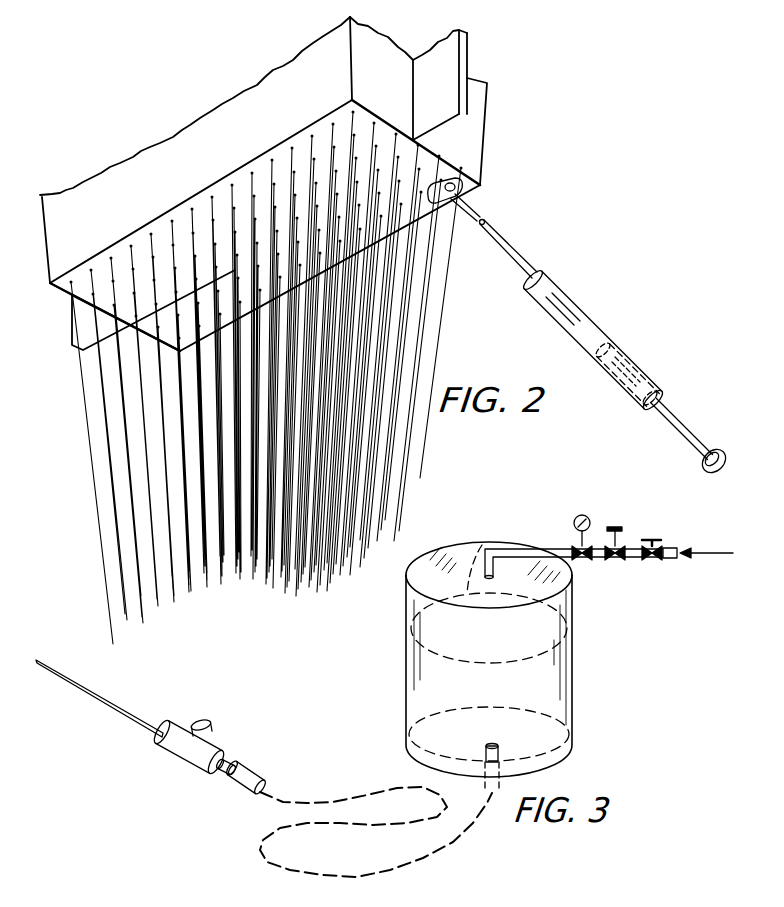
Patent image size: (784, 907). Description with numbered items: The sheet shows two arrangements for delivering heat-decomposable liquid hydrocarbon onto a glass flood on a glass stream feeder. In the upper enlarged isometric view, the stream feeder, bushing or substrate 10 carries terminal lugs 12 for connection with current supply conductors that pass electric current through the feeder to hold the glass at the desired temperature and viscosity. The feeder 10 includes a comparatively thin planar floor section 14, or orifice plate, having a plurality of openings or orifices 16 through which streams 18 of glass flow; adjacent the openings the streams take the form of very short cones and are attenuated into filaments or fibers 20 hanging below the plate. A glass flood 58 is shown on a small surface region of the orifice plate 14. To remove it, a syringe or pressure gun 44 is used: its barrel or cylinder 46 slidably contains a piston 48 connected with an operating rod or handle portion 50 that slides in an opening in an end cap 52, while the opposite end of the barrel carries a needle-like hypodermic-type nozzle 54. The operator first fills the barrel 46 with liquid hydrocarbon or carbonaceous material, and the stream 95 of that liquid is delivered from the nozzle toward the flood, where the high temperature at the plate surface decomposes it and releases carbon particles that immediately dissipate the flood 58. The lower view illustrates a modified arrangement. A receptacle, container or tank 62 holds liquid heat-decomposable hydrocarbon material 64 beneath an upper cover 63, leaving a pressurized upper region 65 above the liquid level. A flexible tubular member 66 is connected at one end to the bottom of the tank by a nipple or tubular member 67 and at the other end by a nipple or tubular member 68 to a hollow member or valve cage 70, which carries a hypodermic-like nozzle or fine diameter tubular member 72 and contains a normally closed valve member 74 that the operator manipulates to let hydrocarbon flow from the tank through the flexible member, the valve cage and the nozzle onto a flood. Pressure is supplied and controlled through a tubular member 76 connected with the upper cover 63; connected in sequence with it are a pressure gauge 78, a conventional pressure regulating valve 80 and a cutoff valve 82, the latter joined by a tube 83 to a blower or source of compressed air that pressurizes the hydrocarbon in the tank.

In FIG. 2, the stream feeder, bushing or substrate 10 is at (492, 106).
In FIG. 2, the terminal lugs 12 is at (468, 56).
In FIG. 2, the floor section 14 is at (72, 282).
In FIG. 2, the openings or orifices 16 is at (293, 152).
In FIG. 2, the streams of glass 18 is at (280, 164).
In FIG. 2, the filaments or fibers 20 is at (140, 423).
In FIG. 2, the syringe or pressure gun 44 is at (628, 335).
In FIG. 2, the barrel or cylinder 46 is at (552, 277).
In FIG. 2, the piston 48 is at (605, 340).
In FIG. 2, the operating rod or handle portion 50 is at (690, 431).
In FIG. 2, the end cap 52 is at (660, 398).
In FIG. 2, the needle-like hypodermic-type nozzle 54 is at (512, 242).
In FIG. 2, the glass flood 58 is at (452, 178).
In FIG. 2, the stream of liquid carbonaceous or hydrocarbon material 95 is at (462, 200).
In FIG. 3, the receptacle, container or tank 62 is at (573, 602).
In FIG. 3, the upper cover 63 is at (442, 560).
In FIG. 3, the liquid heat-decomposable hydrocarbon material 64 is at (489, 635).
In FIG. 3, the upper region of the container 65 is at (466, 597).
In FIG. 3, the flexible tubular member 66 is at (257, 777).
In FIG. 3, the nipple or tubular member 67 is at (432, 757).
In FIG. 3, the nipple or tubular member 68 is at (230, 763).
In FIG. 3, the hollow member or valve cage 70 is at (183, 763).
In FIG. 3, the hypodermic-like nozzle or fine diameter tubular member 72 is at (110, 710).
In FIG. 3, the normally closed valve means or member 74 is at (210, 693).
In FIG. 3, the tubular member 76 is at (510, 552).
In FIG. 3, the pressure gauge 78 is at (582, 517).
In FIG. 3, the pressure regulating valve 80 is at (613, 525).
In FIG. 3, the cutoff valve 82 is at (660, 518).
In FIG. 3, the tube 83 is at (670, 552).